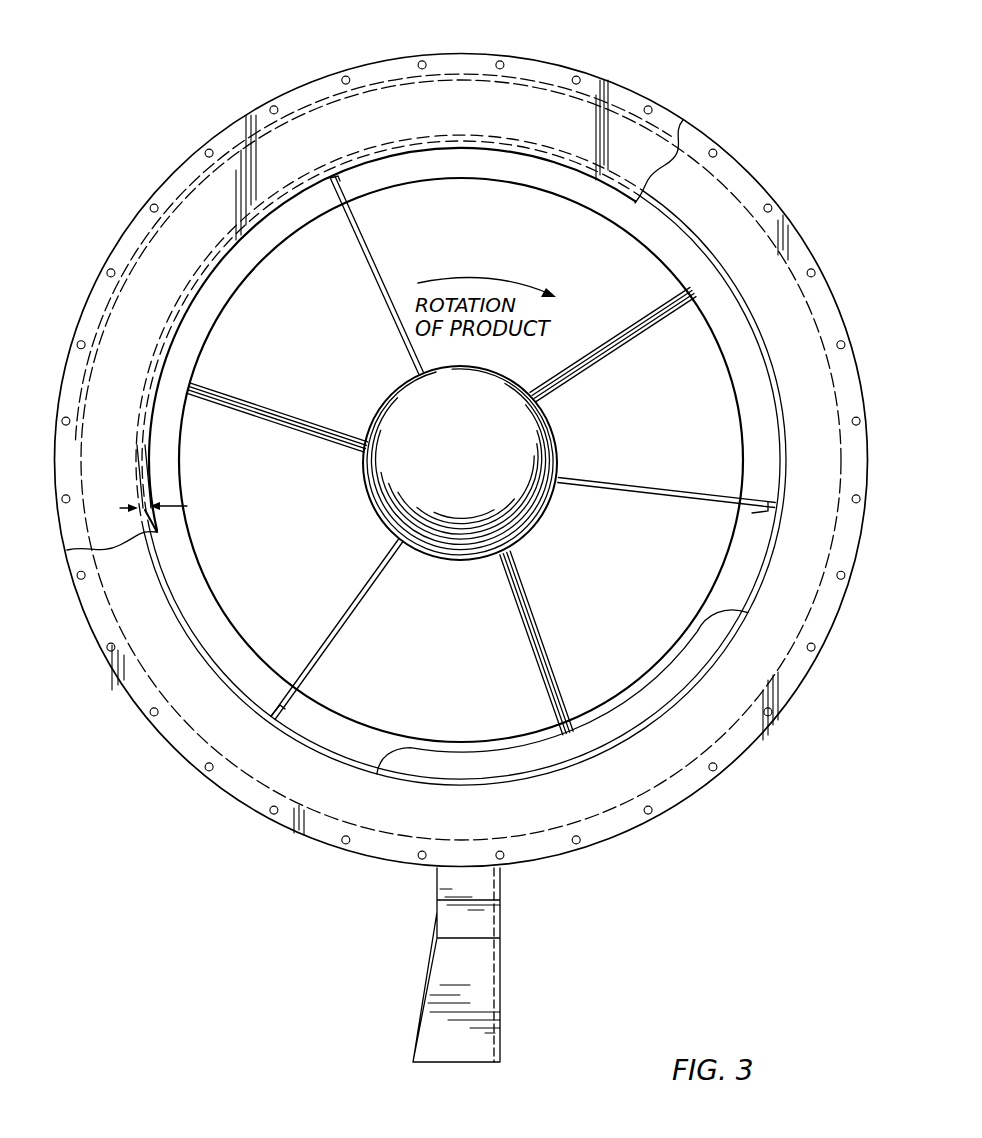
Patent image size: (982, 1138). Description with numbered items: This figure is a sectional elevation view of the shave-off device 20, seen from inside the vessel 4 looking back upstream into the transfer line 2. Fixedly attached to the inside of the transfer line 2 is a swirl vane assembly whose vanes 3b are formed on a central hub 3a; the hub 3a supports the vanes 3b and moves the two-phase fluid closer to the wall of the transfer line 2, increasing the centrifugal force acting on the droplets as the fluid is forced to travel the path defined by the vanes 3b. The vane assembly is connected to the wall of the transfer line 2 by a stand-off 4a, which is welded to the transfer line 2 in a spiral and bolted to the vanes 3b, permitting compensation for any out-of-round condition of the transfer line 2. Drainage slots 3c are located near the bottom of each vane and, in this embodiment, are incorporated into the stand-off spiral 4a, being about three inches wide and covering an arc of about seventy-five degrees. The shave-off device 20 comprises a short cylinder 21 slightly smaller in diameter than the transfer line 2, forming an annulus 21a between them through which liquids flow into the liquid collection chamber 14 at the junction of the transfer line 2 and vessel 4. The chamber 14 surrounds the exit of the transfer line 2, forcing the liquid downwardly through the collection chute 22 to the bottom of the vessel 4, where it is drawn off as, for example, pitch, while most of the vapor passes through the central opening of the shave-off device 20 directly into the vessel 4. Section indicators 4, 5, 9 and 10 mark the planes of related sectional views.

The transfer line 2 is at (137, 452).
The hub 3a is at (556, 431).
The vanes 3b is at (641, 505).
The drainage slots 3c is at (620, 726).
The vessel 4 is at (758, 460).
The stand-off 4a is at (276, 709).
The section line 5- 5 is at (531, 792).
The section line 9- 9 is at (43, 467).
The section line 10- 10 is at (461, 30).
The liquid collection chamber 14 is at (152, 619).
The shave-off device 20 is at (700, 95).
The short cylinder 21 is at (150, 480).
The annulus 21a is at (155, 517).
The collection chute 22 is at (440, 985).